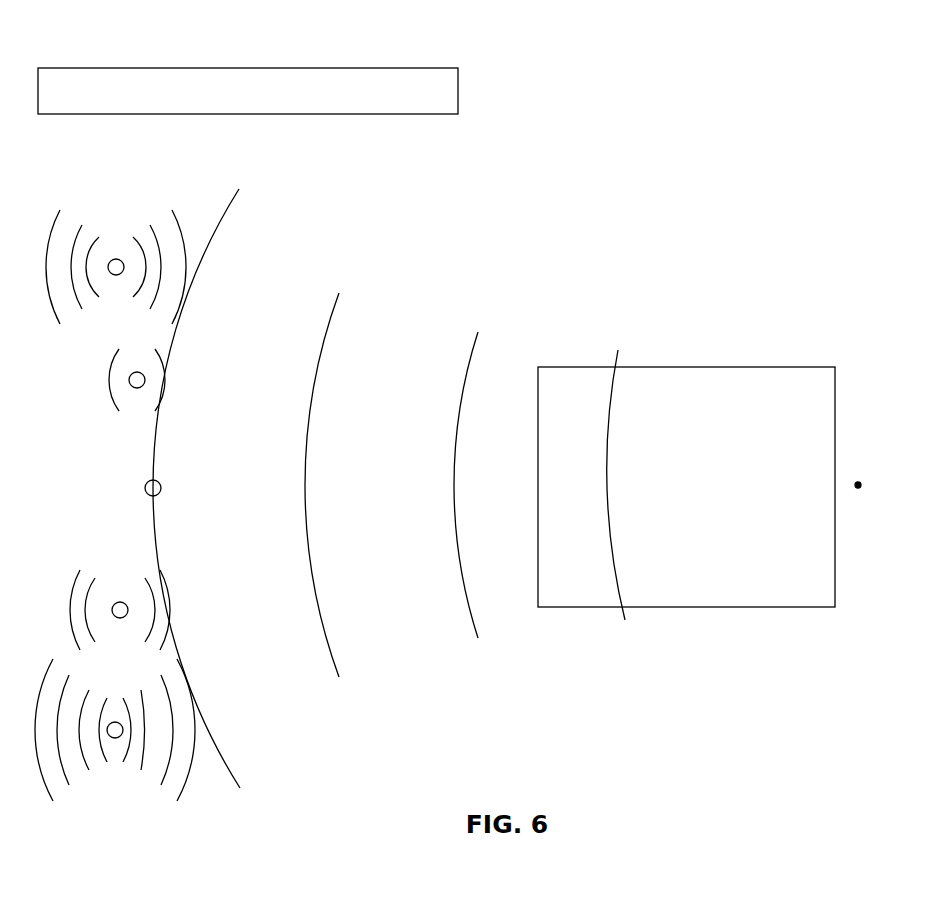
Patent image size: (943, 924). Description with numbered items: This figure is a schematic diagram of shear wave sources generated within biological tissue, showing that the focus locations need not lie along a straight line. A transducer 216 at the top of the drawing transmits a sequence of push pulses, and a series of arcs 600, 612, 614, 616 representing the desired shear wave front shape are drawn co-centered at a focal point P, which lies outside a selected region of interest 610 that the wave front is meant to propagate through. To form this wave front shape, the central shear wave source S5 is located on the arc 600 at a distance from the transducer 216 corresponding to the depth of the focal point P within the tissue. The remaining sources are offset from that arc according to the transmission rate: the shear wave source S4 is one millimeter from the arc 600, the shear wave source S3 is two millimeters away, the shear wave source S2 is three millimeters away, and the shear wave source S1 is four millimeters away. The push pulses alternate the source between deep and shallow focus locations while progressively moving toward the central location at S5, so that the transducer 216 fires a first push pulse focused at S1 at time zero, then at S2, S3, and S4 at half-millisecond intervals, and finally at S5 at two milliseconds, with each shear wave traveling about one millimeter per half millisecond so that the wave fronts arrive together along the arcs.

The transducer 216 is at (240, 68).
The arc 600 is at (224, 220).
The arc 612 is at (327, 338).
The arc 614 is at (468, 376).
The arc 616 is at (617, 357).
The region of interest 610 is at (703, 367).
The shear wave source S1 is at (110, 724).
The shear wave source S2 is at (110, 260).
The shear wave source S3 is at (115, 603).
The shear wave source S4 is at (133, 373).
The shear wave source S5 is at (148, 481).
The focal point P is at (865, 499).